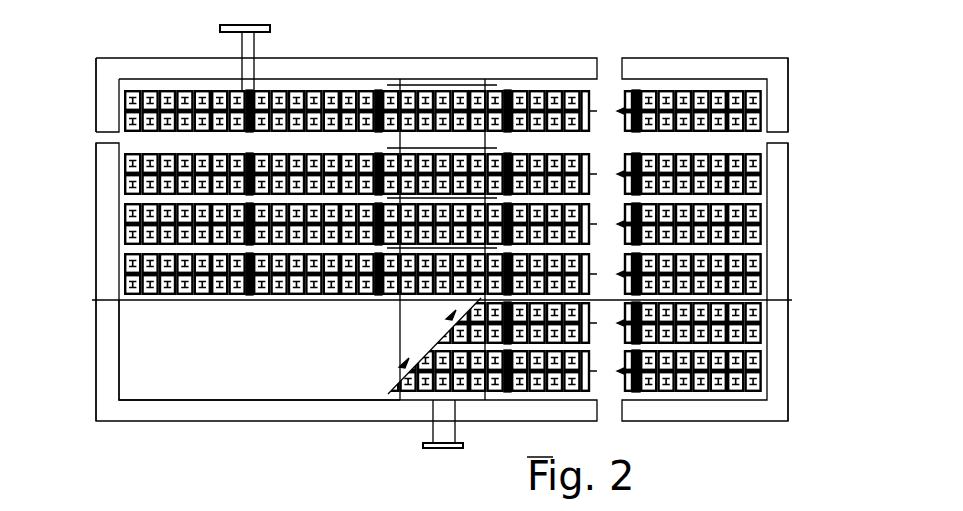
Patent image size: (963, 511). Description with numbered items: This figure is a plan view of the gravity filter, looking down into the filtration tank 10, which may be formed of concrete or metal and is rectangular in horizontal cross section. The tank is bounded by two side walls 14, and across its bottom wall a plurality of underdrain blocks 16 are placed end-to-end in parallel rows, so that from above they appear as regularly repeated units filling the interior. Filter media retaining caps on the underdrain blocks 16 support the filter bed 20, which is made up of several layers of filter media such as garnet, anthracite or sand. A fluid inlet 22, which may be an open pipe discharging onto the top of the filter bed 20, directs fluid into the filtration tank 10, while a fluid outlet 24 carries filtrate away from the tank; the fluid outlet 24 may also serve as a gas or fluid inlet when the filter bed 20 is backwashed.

The filtration tank 10 is at (811, 128).
The side walls 14 is at (104, 214).
The underdrain blocks 16 is at (176, 112).
The filter bed 20 is at (199, 510).
The fluid inlet 22 is at (252, 42).
The fluid outlet 24 is at (433, 428).